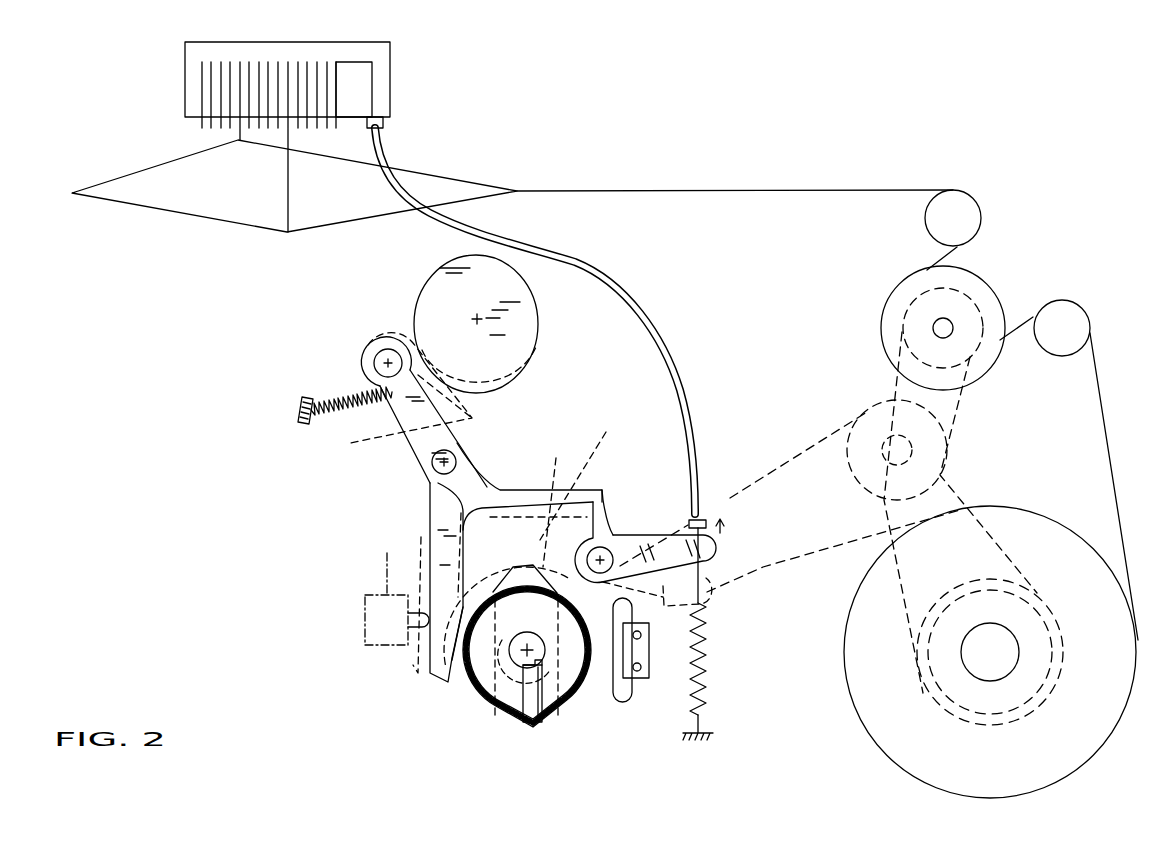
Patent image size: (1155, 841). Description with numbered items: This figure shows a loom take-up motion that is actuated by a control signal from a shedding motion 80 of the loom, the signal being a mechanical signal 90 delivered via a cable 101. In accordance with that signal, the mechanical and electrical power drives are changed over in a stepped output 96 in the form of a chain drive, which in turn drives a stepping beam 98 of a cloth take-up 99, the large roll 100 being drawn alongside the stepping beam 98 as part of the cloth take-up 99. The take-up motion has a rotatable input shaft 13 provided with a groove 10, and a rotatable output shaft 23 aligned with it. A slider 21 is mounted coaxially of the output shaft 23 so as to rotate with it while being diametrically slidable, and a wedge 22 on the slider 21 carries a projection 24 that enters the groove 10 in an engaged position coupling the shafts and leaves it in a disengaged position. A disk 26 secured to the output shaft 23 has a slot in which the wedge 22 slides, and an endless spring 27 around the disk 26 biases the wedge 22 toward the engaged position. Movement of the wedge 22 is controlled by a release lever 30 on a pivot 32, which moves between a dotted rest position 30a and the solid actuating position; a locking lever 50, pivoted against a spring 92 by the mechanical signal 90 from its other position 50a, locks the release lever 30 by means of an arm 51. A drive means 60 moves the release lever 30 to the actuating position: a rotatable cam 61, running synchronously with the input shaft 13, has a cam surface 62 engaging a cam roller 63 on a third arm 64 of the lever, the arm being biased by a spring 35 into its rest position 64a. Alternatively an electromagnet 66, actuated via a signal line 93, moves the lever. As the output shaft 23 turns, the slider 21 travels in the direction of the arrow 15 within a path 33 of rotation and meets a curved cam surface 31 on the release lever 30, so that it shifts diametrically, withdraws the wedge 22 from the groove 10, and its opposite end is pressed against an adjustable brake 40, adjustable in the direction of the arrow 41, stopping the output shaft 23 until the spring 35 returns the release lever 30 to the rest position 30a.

The groove 10 is at (540, 660).
The input shaft 13 is at (550, 657).
The arrow 15 is at (503, 488).
The slider 21 is at (510, 723).
The wedge 22 is at (528, 707).
The output shaft 23 is at (500, 683).
The projection 24 is at (523, 672).
The disk 26 is at (482, 662).
The endless spring 27 is at (558, 693).
The release lever 30 is at (437, 513).
The rest position 30a is at (349, 676).
The curved cam surface 31 is at (447, 660).
The pivot 32 is at (432, 462).
The path of rotation 33 is at (582, 474).
The spring 35 is at (329, 401).
The adjustable brake 40 is at (648, 648).
The arrow 41 is at (643, 692).
The locking lever 50 is at (650, 545).
The locking lever position 50a is at (705, 600).
The arm 51 is at (603, 500).
The drive means 60 is at (441, 362).
The rotatable cam 61 is at (538, 305).
The cam surface 62 is at (532, 363).
The cam roller 63 is at (379, 338).
The third arm 64 is at (403, 407).
The rest position 64a is at (350, 443).
The electromagnet 66 is at (365, 617).
The shedding motion 80 is at (437, 58).
The mechanical signal 90 is at (710, 546).
The spring 92 is at (703, 650).
The signal line 93 is at (386, 580).
The stepped output 96 is at (768, 472).
The stepping beam 98 is at (993, 293).
The cloth take-up 99 is at (1050, 218).
The web roll 100 is at (848, 688).
The cable 101 is at (655, 317).